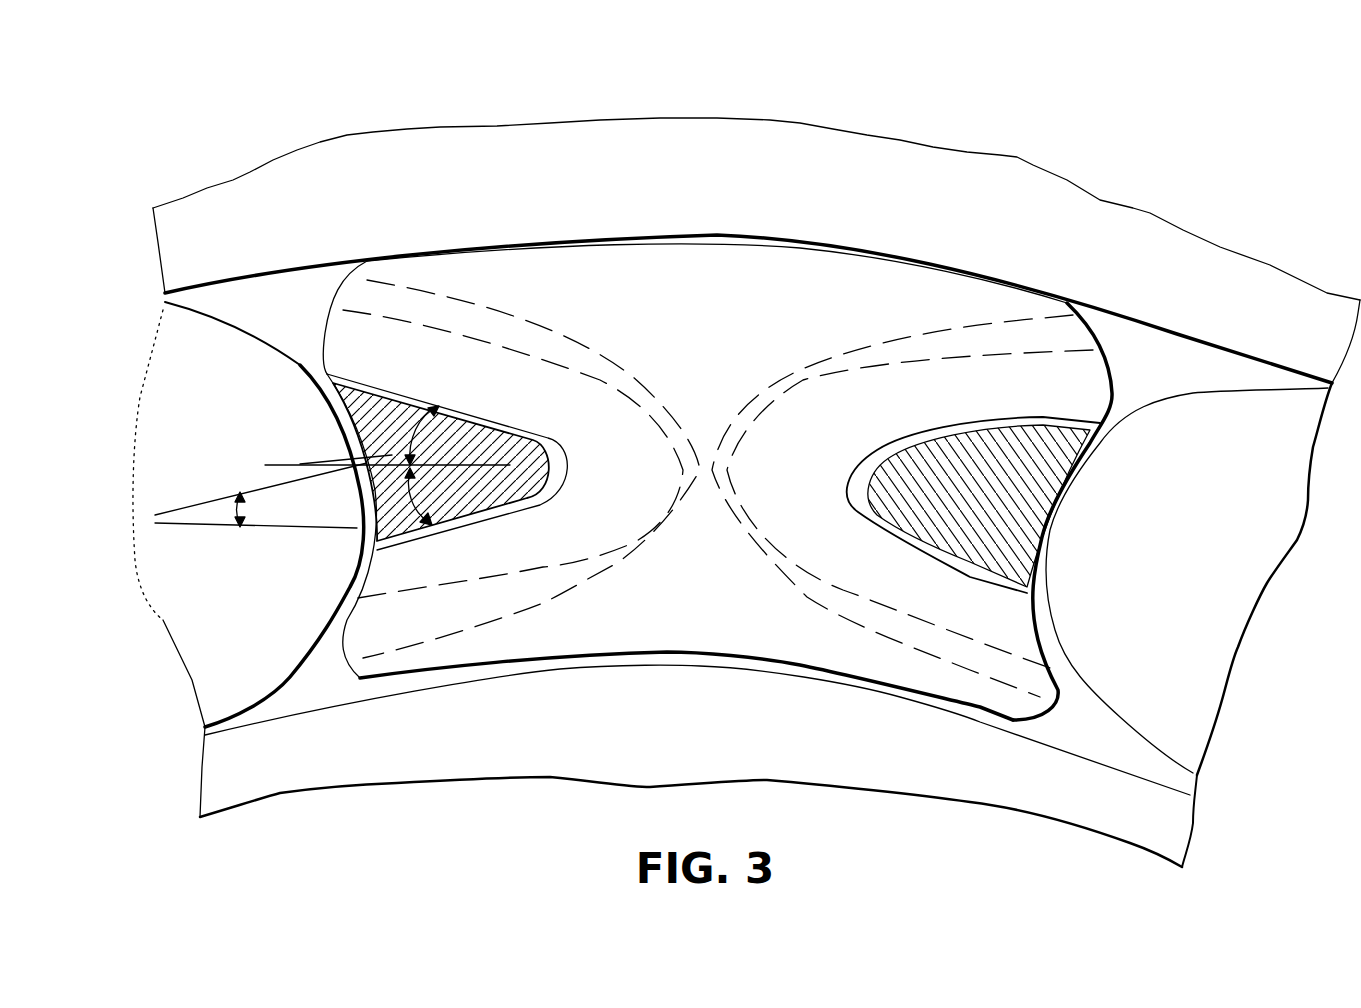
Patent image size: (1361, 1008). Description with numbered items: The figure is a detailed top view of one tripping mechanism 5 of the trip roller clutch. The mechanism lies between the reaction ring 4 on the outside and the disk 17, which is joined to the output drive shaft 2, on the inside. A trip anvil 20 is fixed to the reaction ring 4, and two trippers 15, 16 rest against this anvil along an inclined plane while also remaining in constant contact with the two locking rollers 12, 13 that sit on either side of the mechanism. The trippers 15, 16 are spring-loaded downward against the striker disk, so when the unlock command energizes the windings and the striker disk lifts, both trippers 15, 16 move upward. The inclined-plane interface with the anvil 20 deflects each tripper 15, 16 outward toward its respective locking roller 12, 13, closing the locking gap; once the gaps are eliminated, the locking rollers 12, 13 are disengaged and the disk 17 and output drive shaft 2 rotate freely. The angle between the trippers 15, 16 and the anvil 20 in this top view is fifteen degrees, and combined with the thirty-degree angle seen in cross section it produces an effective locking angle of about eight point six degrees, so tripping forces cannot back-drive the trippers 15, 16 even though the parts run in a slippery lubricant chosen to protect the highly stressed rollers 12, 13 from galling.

The reaction ring 4 is at (795, 135).
The trip anvil 20 is at (908, 268).
The locking roller 13 is at (170, 388).
The locking roller 12 is at (1283, 550).
The tripper 16 is at (328, 387).
The tripper 15 is at (1097, 440).
The tripping mechanism 5 is at (702, 597).
The disk 17 is at (678, 738).
The output drive shaft 2 is at (497, 772).